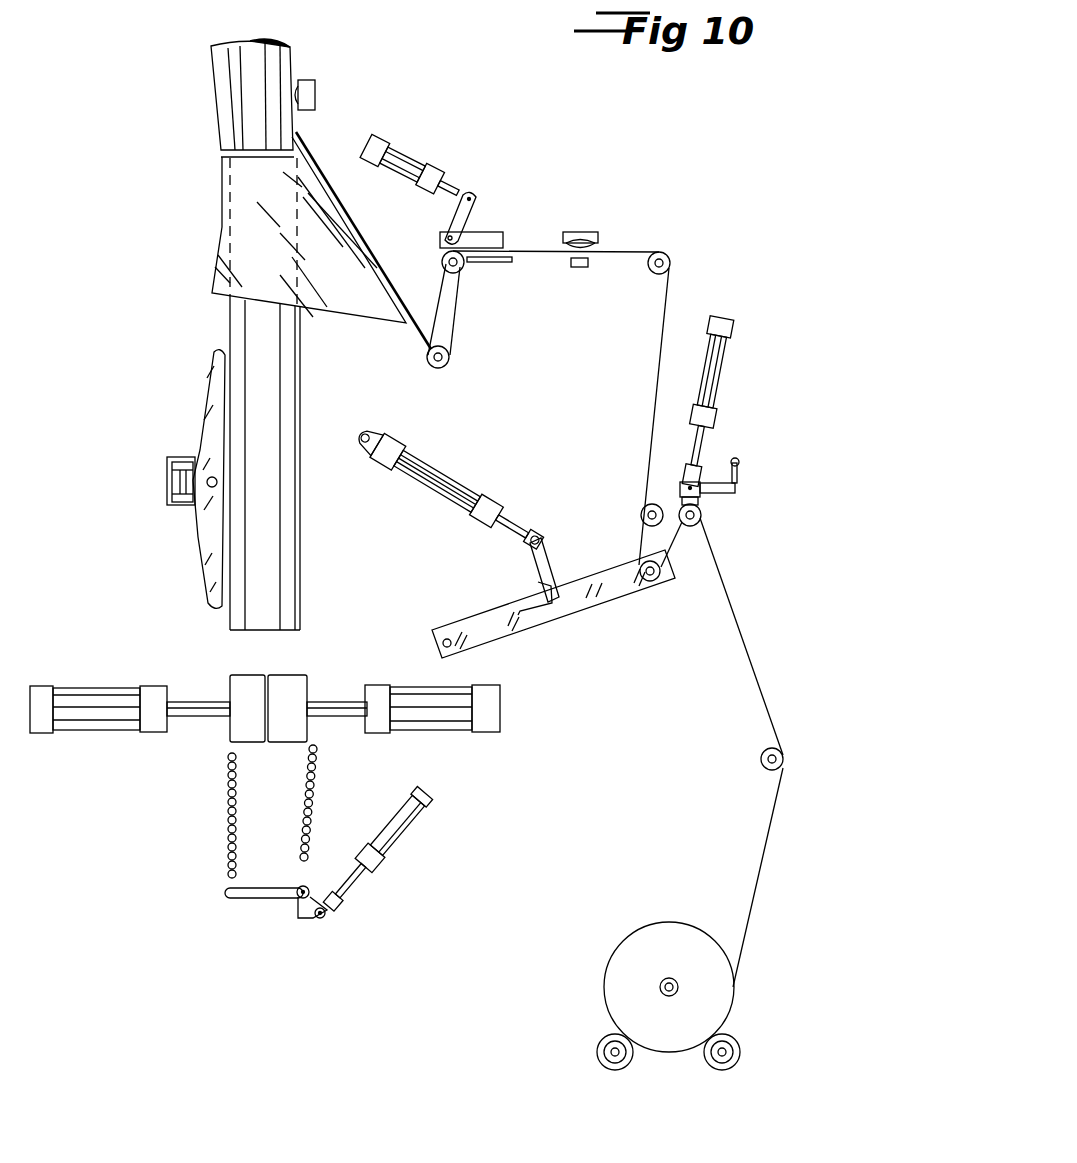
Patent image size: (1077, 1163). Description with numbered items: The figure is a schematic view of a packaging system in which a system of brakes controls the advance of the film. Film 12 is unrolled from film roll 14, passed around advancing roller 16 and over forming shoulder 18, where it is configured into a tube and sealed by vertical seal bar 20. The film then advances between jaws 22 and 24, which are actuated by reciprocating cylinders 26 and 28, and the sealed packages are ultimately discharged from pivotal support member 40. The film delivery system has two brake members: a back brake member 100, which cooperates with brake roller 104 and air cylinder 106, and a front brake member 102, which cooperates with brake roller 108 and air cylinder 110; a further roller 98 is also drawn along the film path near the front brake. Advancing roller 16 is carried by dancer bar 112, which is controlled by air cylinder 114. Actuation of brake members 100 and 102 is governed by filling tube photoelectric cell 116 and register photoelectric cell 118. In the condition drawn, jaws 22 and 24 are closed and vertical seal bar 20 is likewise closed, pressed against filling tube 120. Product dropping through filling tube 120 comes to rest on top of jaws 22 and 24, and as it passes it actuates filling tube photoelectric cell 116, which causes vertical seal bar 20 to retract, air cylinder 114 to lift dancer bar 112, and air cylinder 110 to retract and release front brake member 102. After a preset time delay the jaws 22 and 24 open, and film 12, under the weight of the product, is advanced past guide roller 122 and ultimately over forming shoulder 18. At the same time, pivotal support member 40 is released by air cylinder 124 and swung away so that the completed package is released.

The film 12 is at (772, 827).
The film roll 14 is at (628, 943).
The advancing roller 16 is at (635, 585).
The forming shoulder 18 is at (352, 300).
The vertical seal bar 20 is at (206, 449).
The jaw 22 is at (308, 730).
The jaw 24 is at (242, 692).
The reciprocating cylinder 26 is at (460, 720).
The reciprocating cylinder 28 is at (87, 723).
The pivotal support member 40 is at (238, 893).
The roller 98 is at (667, 254).
The back brake member 100 is at (717, 490).
The front brake member 102 is at (487, 237).
The brake roller 104 is at (692, 527).
The air cylinder 106 is at (720, 368).
The brake roller 108 is at (453, 274).
The air cylinder 110 is at (398, 156).
The dancer bar 112 is at (592, 600).
The air cylinder 114 is at (430, 477).
The filling tube photoelectric cell 116 is at (309, 98).
The register photoelectric cell 118 is at (583, 232).
The filling tube 120 is at (278, 497).
The guide roller 122 is at (763, 752).
The air cylinder 124 is at (400, 837).